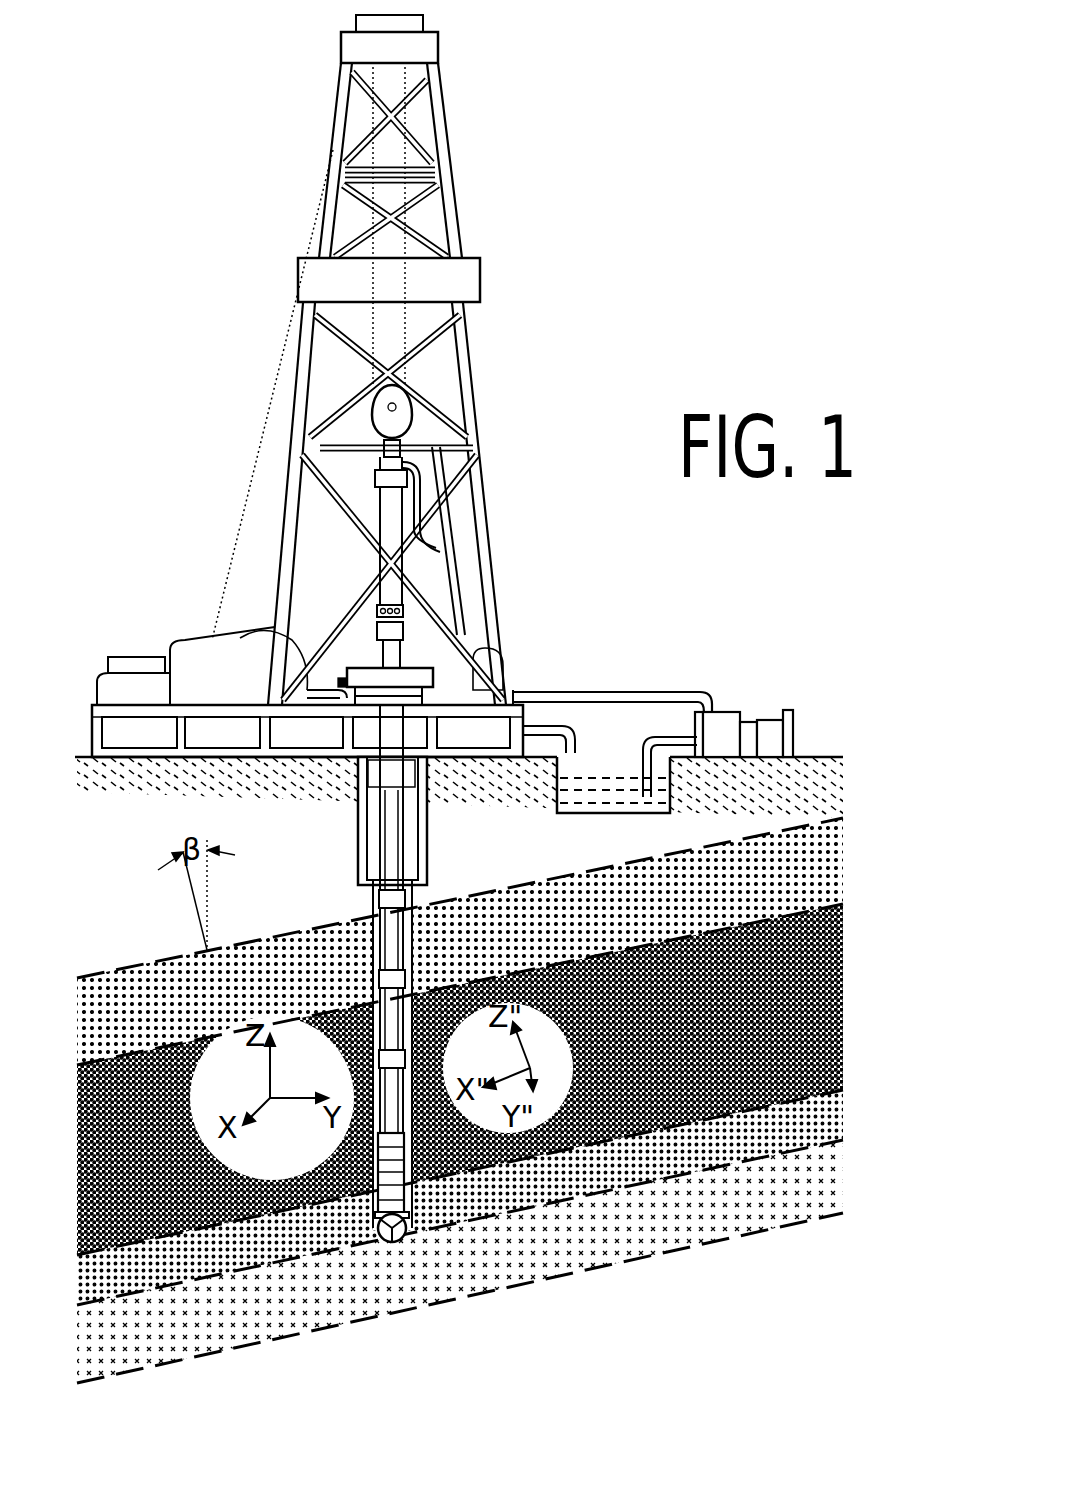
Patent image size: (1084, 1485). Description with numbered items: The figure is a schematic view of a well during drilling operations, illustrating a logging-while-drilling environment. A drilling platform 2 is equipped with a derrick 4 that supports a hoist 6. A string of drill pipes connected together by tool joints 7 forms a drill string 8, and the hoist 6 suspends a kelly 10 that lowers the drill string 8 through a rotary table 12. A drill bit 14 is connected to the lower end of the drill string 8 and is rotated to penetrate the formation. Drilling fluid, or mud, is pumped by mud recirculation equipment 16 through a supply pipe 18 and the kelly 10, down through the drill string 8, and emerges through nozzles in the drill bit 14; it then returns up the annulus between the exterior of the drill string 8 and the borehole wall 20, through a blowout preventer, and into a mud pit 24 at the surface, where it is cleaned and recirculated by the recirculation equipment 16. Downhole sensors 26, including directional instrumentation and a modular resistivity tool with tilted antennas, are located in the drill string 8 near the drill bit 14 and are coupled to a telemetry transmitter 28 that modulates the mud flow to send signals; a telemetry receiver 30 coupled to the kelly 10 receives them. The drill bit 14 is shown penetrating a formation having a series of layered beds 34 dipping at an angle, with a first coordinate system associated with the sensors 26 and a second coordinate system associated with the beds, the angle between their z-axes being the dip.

The drilling platform 2 is at (90, 720).
The derrick 4 is at (458, 208).
The hoist 6 is at (417, 400).
The tool joints 7 is at (354, 919).
The drill string 8 is at (377, 892).
The kelly 10 is at (390, 510).
The rotary table 12 is at (420, 663).
The drill bit 14 is at (410, 1223).
The mud recirculation equipment 16 is at (713, 720).
The supply pipe 18 is at (630, 692).
The borehole wall 20 is at (413, 905).
The mud pit 24 is at (670, 807).
The downhole sensors 26 is at (382, 1187).
The telemetry transmitter 28 is at (397, 1153).
The telemetry receiver 30 is at (402, 608).
The layered beds 34 is at (873, 1198).